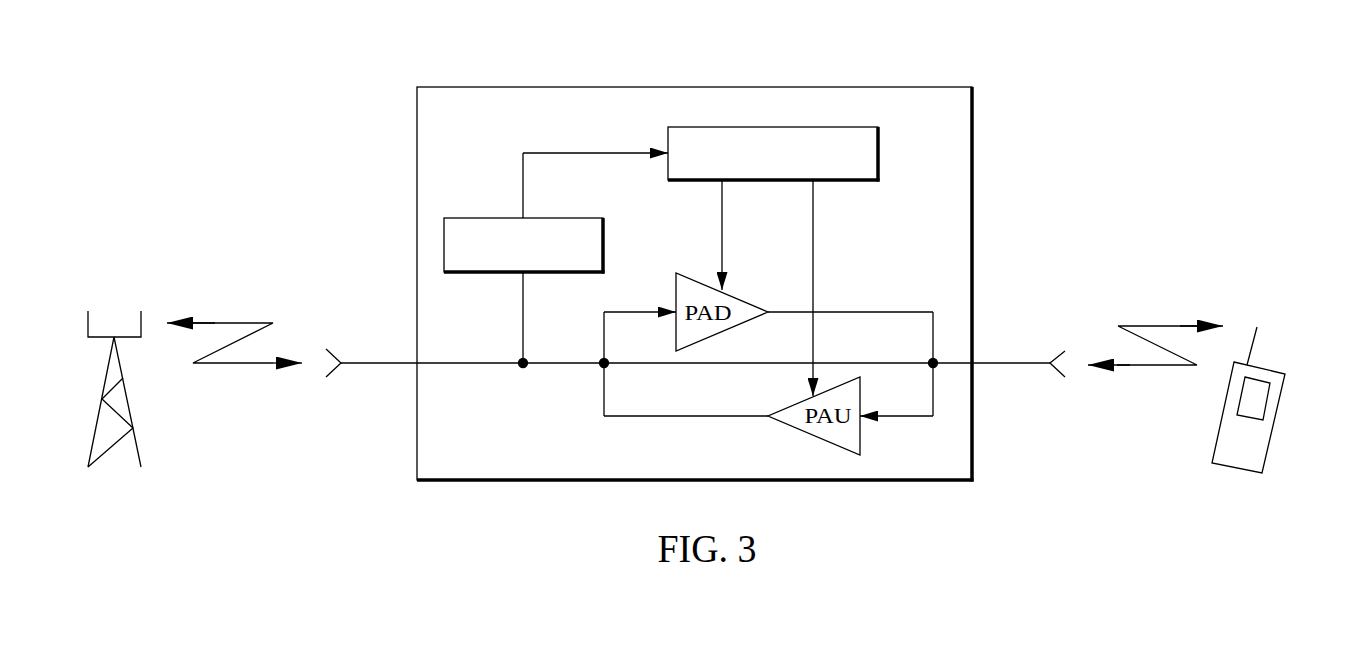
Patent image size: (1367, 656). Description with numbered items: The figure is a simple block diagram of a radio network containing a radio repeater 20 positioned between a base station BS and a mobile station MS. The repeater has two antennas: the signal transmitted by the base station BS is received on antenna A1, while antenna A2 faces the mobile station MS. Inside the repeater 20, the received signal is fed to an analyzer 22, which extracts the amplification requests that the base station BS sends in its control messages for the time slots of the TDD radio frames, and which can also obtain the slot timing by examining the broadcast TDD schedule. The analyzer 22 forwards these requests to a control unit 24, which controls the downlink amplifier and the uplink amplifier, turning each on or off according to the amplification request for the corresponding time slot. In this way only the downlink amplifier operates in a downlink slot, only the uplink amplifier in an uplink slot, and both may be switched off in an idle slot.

The radio repeater 20 is at (417, 97).
The analyzer 22 is at (603, 231).
The control unit 24 is at (878, 140).
The antenna A1 is at (365, 363).
The antenna A2 is at (1025, 363).
The base station BS is at (95, 429).
The mobile station MS is at (1285, 390).